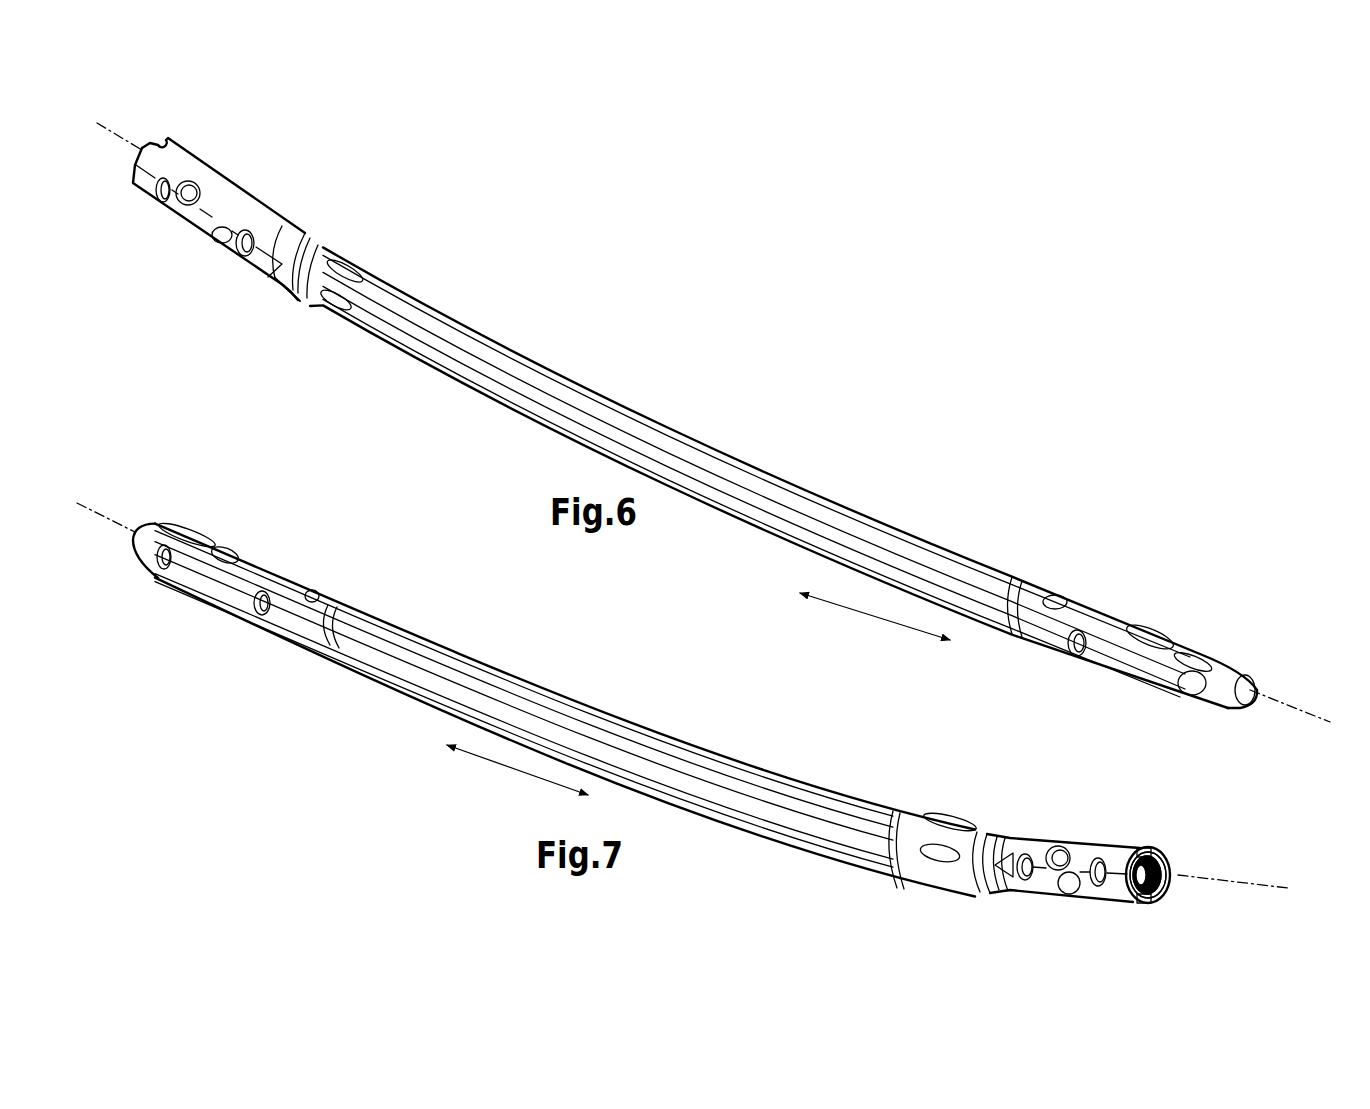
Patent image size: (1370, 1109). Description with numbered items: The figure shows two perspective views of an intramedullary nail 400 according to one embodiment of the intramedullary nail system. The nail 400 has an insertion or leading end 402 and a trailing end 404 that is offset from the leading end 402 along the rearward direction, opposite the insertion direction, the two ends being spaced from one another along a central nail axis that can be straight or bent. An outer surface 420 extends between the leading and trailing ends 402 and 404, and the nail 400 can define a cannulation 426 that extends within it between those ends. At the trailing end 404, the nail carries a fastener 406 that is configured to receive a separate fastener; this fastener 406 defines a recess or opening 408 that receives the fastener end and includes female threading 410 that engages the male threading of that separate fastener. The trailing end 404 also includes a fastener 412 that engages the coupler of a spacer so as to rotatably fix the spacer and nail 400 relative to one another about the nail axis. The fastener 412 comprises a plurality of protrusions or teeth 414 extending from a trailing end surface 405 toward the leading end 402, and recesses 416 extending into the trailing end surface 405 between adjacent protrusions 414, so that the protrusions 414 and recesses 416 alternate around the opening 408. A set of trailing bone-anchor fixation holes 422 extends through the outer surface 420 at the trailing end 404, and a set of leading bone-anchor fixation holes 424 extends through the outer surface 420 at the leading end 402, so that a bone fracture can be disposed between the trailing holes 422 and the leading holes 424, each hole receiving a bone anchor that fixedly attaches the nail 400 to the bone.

In FIG. 6, the intramedullary nail 400 is at (785, 445).
In FIG. 7, the intramedullary nail 400 is at (642, 702).
In FIG. 6, the leading end 402 is at (1232, 624).
In FIG. 7, the leading end 402 is at (255, 525).
In FIG. 6, the trailing end 404 is at (250, 168).
In FIG. 7, the trailing end 404 is at (1145, 874).
In FIG. 7, the trailing end surface 405 is at (1132, 899).
In FIG. 7, the fastener 406 is at (1166, 863).
In FIG. 7, the opening 408 is at (1166, 838).
In FIG. 7, the female threading 410 is at (1147, 875).
In FIG. 7, the fastener 412 is at (1168, 895).
In FIG. 7, the protrusion 414 is at (1148, 875).
In FIG. 7, the recess 416 is at (1138, 847).
In FIG. 6, the outer surface 420 is at (840, 520).
In FIG. 7, the outer surface 420 is at (537, 713).
In FIG. 6, the trailing bone-anchor fixation holes 422 is at (192, 208).
In FIG. 7, the trailing bone-anchor fixation holes 422 is at (1061, 870).
In FIG. 6, the leading bone-anchor fixation holes 424 is at (1070, 637).
In FIG. 7, the leading bone-anchor fixation holes 424 is at (275, 595).
In FIG. 7, the cannulation 426 is at (1175, 872).